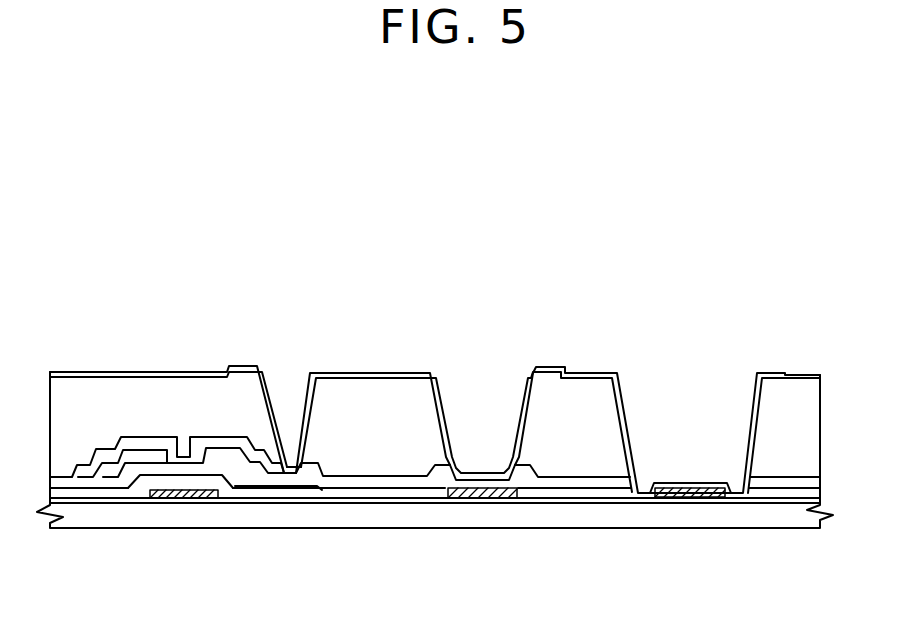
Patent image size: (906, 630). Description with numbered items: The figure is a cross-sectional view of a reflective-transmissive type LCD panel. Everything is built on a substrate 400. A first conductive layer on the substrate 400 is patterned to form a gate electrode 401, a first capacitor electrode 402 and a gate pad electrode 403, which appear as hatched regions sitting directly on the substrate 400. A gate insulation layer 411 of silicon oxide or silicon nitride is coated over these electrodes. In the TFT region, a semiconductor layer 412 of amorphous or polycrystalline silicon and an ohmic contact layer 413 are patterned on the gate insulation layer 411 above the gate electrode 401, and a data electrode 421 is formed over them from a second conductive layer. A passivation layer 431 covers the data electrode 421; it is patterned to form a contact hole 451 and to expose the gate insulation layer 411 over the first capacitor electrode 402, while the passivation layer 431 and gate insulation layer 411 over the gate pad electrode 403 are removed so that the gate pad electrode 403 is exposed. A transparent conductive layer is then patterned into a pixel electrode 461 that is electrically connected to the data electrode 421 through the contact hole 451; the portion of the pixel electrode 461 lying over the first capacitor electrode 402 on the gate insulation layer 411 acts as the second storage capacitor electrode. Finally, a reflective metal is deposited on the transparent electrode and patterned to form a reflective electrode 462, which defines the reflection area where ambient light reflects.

The substrate 400 is at (92, 518).
The gate electrode 401 is at (187, 493).
The first capacitor electrode 402 is at (473, 500).
The gate pad electrode 403 is at (690, 500).
The gate insulation layer 411 is at (415, 493).
The semiconductor layer 412 is at (128, 478).
The ohmic contact layer 413 is at (246, 483).
The data electrode 421 is at (298, 484).
The passivation layer 431 is at (352, 483).
The contact hole 451 is at (288, 440).
The pixel electrode 461 is at (375, 372).
The reflective electrode 462 is at (122, 372).